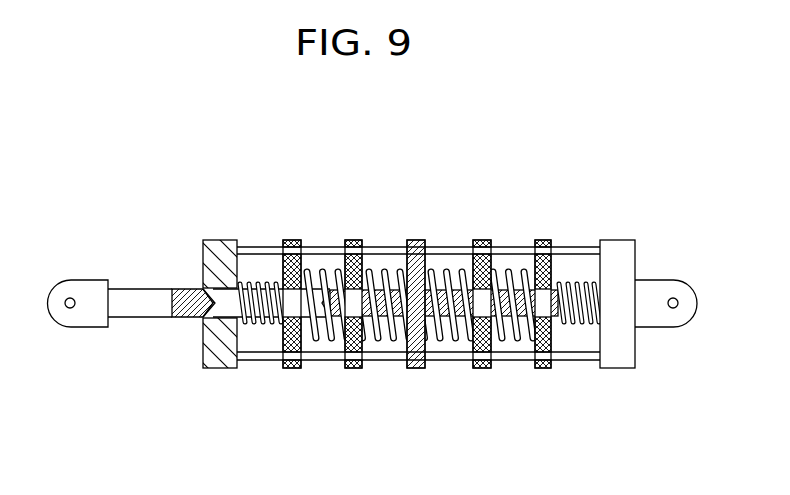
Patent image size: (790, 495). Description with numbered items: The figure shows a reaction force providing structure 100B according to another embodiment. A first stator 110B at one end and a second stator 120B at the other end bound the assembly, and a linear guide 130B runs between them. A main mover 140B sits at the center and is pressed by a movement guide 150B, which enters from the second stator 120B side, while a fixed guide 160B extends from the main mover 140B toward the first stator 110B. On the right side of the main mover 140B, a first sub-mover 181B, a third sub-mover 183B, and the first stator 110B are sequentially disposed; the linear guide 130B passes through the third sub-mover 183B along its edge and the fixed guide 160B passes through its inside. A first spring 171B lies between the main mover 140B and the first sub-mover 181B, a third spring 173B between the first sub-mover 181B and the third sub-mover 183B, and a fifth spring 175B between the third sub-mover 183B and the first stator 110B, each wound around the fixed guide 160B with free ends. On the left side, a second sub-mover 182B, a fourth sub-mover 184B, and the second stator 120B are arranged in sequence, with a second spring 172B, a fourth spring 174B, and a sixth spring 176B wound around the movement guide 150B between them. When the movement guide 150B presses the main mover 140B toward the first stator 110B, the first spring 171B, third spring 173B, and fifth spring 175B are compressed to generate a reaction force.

The reaction force providing structure 100B is at (121, 147).
The first stator 110B is at (627, 243).
The second stator 120B is at (223, 240).
The linear guide 130B is at (578, 247).
The main mover 140B is at (416, 240).
The movement guide 150B is at (135, 290).
The fixed guide 160B is at (417, 335).
The first spring 171B is at (451, 328).
The second spring 172B is at (383, 320).
The third spring 173B is at (506, 328).
The fourth spring 174B is at (320, 328).
The fifth spring 175B is at (577, 325).
The sixth spring 176B is at (248, 325).
The first sub-mover 181B is at (543, 240).
The second sub-mover 182B is at (293, 240).
The third sub-mover 183B is at (481, 240).
The fourth sub-mover 184B is at (354, 240).